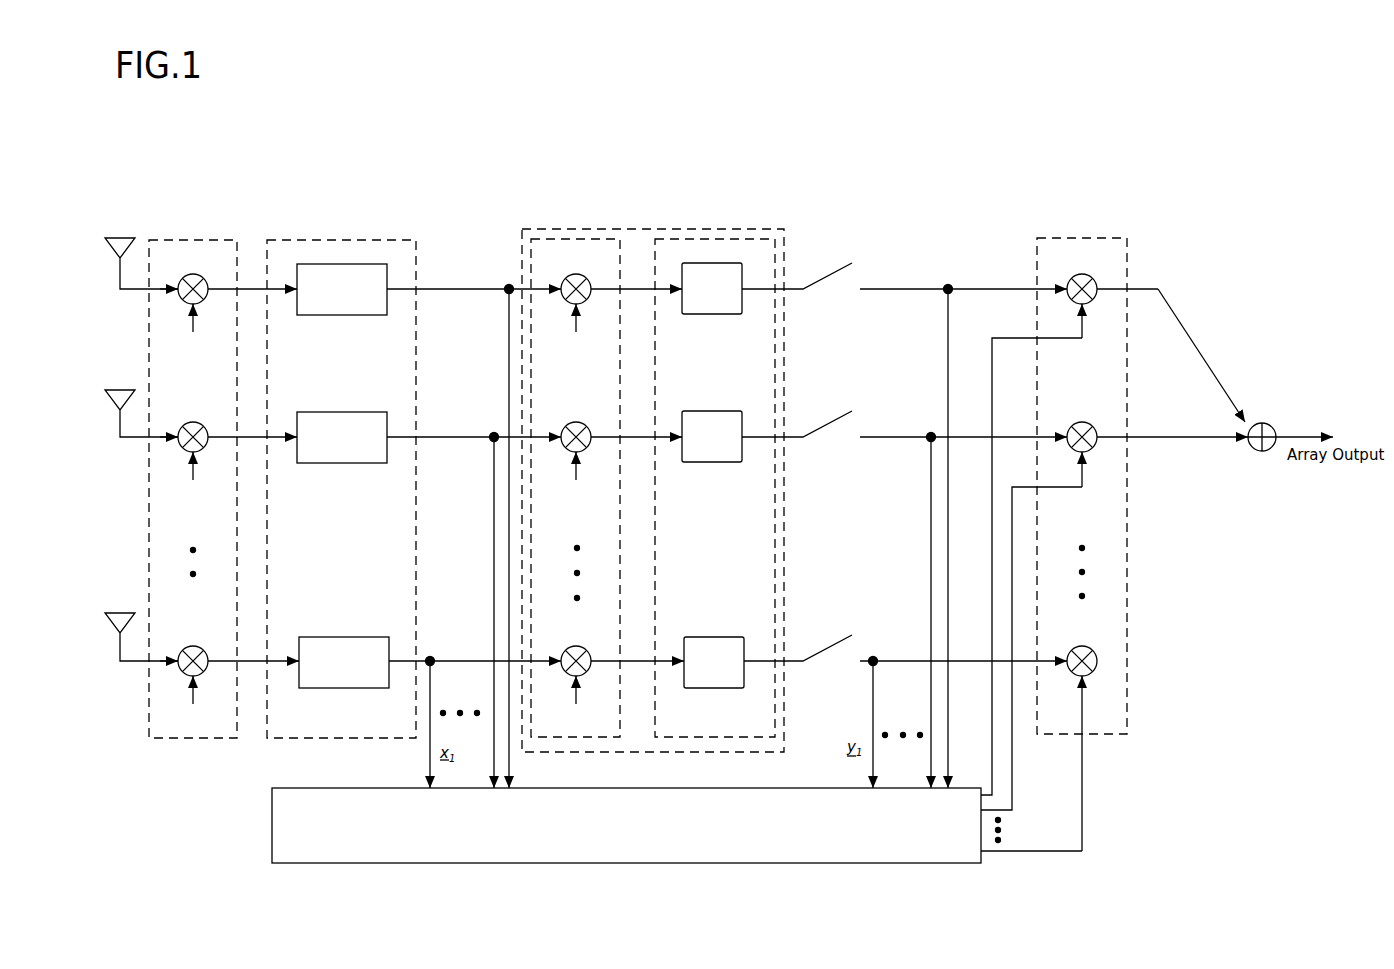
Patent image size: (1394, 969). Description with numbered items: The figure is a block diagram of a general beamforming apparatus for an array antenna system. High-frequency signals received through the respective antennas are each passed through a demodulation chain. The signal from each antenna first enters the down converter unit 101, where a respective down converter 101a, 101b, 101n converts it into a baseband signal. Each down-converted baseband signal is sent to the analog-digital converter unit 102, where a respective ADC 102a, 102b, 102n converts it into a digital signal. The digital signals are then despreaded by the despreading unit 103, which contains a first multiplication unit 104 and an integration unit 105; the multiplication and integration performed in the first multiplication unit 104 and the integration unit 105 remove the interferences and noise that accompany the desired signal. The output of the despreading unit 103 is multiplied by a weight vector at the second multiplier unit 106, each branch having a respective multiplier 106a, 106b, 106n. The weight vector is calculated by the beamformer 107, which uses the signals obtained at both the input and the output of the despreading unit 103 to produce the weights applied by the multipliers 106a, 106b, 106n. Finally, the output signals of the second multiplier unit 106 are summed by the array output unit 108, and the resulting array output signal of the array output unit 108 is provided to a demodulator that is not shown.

The down converter unit 101 is at (206, 239).
The down converter 101a is at (189, 276).
The down converter 101b is at (189, 422).
The down converter 101n is at (189, 646).
The analog-digital converter unit 102 is at (355, 239).
The ADC 102a is at (341, 316).
The ADC 102b is at (343, 464).
The ADC 102n is at (341, 637).
The despreading unit 103 is at (561, 229).
The first multiplication unit 104 is at (620, 239).
The integration unit 105 is at (745, 239).
The second multiplier unit 106 is at (1072, 238).
The multiplier 106a is at (1079, 274).
The multiplier 106b is at (1079, 422).
The multiplier 106n is at (1081, 646).
The beamformer 107 is at (432, 864).
The array output unit 108 is at (1262, 422).